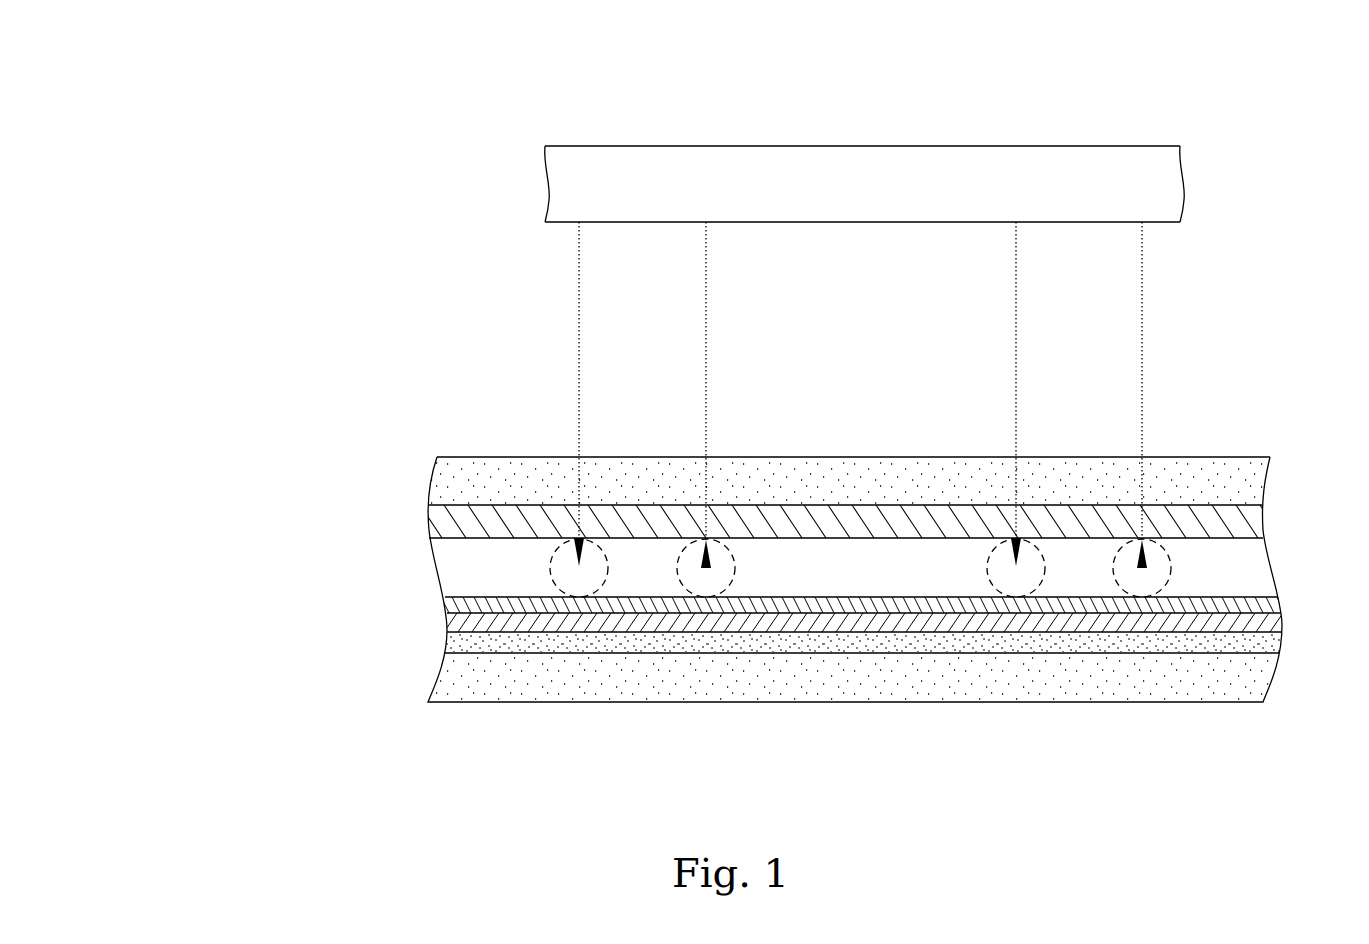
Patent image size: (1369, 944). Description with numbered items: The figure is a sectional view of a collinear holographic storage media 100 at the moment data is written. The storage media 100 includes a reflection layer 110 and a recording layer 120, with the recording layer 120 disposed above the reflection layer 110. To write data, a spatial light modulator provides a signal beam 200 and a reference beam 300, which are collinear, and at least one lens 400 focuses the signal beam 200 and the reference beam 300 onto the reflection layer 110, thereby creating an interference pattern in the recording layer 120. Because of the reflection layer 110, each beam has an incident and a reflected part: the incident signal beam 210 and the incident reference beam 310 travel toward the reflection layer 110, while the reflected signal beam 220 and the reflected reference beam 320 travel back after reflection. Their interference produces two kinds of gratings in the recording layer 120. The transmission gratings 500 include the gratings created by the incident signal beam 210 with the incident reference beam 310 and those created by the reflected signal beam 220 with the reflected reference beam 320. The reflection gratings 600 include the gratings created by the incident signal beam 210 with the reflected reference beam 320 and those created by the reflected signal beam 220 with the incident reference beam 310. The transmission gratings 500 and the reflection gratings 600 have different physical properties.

The collinear holographic storage media 100 is at (283, 538).
The reflection layer 110 is at (445, 637).
The recording layer 120 is at (442, 572).
The signal beam 200 is at (745, 80).
The incident signal beam 210 is at (582, 256).
The reflected signal beam 220 is at (708, 252).
The reference beam 300 is at (1012, 80).
The incident reference beam 310 is at (1018, 256).
The reflected reference beam 320 is at (1143, 256).
The lens 400 is at (562, 182).
The transmission gratings 500 is at (1000, 585).
The reflection gratings 600 is at (1100, 540).